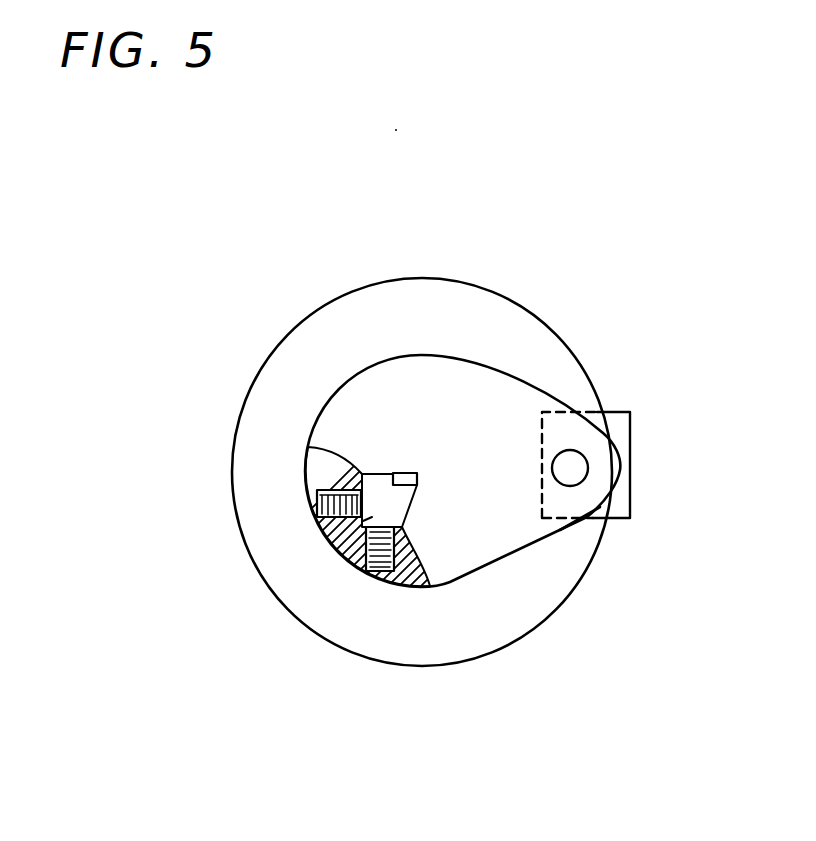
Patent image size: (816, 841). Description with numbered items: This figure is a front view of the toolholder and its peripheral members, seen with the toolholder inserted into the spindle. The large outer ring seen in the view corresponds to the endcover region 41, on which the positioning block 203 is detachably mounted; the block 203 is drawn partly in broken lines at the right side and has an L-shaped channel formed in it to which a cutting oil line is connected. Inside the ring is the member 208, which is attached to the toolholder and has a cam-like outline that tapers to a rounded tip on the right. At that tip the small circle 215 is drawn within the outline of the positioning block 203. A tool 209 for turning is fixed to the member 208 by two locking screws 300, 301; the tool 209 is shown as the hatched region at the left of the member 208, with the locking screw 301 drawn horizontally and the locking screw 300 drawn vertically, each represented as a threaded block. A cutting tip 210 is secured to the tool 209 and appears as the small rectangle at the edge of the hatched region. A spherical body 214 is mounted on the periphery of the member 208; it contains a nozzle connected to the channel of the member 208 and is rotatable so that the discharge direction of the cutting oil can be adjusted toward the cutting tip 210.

The housing ring 41 is at (527, 603).
The member 208 is at (473, 553).
The spherical body 214 is at (603, 520).
The pin 215 is at (561, 467).
The positioning block 203 is at (630, 502).
The tool 209 is at (350, 521).
The cutting tip 210 is at (410, 473).
The locking screw 300 is at (373, 582).
The locking screw 301 is at (317, 504).